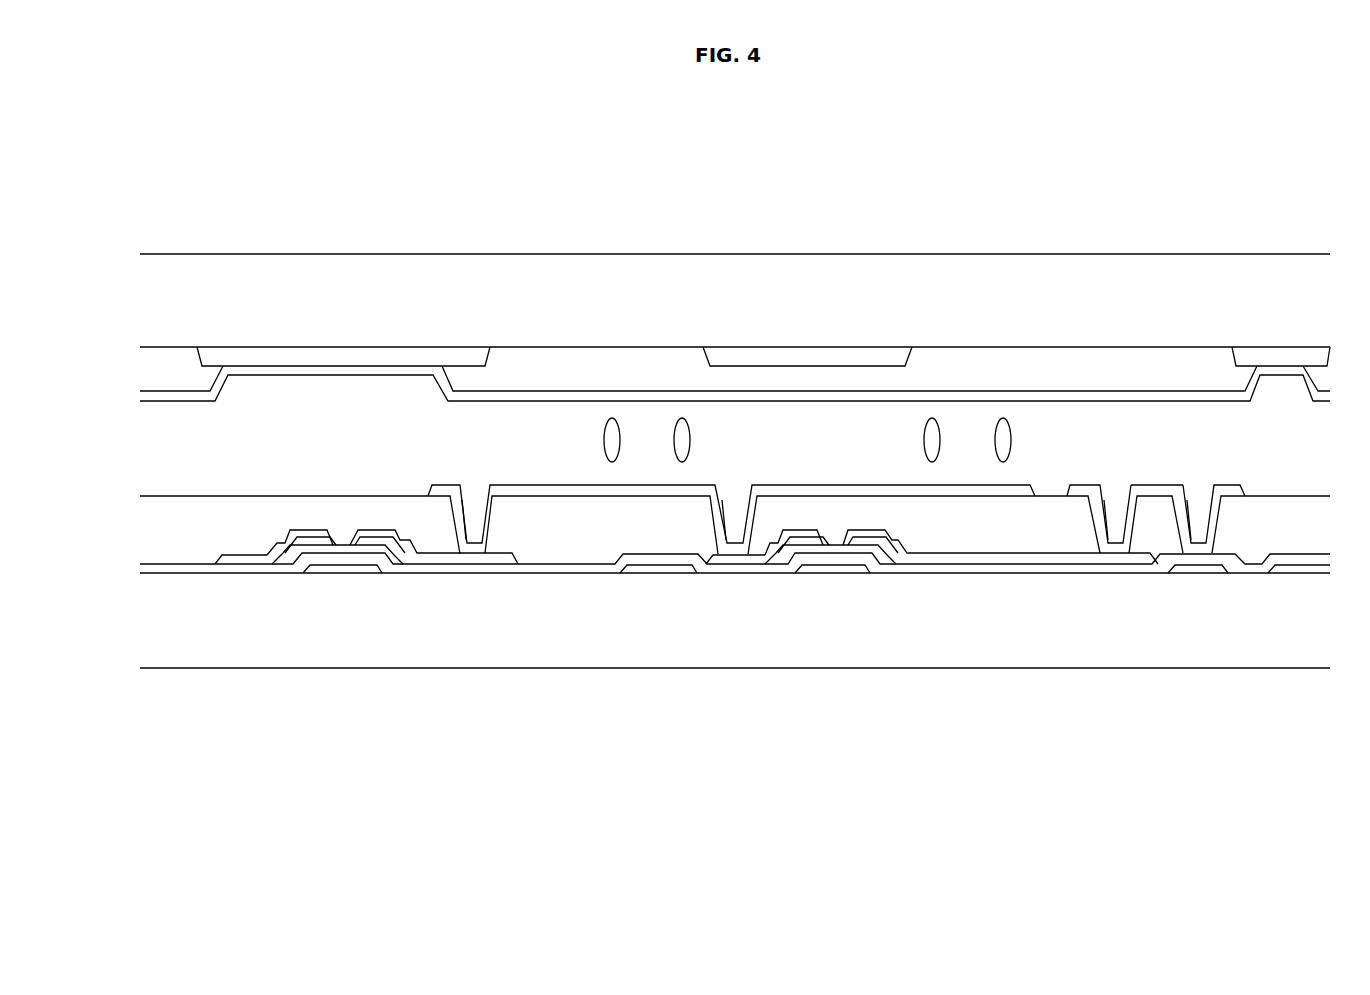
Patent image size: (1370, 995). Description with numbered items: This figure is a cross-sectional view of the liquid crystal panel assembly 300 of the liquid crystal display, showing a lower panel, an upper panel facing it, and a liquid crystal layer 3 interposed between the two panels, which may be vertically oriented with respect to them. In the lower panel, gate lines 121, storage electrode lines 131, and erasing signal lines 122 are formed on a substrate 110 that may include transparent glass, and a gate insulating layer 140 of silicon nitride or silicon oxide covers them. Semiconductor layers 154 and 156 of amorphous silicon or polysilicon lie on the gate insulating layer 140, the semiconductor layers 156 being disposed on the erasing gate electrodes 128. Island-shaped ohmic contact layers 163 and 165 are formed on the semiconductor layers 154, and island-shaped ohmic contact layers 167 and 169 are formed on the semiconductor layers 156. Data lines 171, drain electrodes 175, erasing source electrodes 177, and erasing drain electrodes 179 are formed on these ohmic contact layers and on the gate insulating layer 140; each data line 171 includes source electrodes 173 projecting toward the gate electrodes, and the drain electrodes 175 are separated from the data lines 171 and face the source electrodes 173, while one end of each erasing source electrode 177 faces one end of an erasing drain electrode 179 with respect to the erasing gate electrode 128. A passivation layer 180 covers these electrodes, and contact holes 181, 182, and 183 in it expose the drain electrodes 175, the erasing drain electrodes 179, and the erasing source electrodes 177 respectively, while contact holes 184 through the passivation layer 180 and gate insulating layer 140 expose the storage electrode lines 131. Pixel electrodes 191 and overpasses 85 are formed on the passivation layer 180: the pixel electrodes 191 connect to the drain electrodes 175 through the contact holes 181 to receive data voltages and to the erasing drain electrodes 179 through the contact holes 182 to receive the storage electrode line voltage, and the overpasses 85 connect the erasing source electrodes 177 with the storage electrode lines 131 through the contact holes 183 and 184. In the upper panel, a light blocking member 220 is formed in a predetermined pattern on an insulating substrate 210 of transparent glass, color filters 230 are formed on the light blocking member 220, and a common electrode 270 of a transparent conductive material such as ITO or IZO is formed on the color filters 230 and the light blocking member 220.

The liquid crystal panel assembly 300 is at (284, 181).
The insulating substrate 210 is at (458, 262).
The light blocking member 220 is at (369, 357).
The color filters 230 is at (621, 357).
The common electrode 270 is at (1002, 396).
The liquid crystal layer 3 is at (138, 400).
The substrate 110 is at (556, 653).
The gate lines 121 is at (330, 571).
The erasing signal lines 122 is at (660, 571).
The erasing gate electrodes 128 is at (825, 571).
The storage electrode lines 131 is at (1195, 571).
The gate insulating layer 140 is at (1112, 564).
The semiconductor layers 154 is at (362, 548).
The semiconductor layers 156 is at (856, 548).
The ohmic contact layers 163 is at (289, 548).
The ohmic contact layers 165 is at (393, 540).
The ohmic contact layers 167 is at (888, 540).
The ohmic contact layers 169 is at (776, 558).
The data lines 171 is at (245, 563).
The source electrodes 173 is at (322, 533).
The drain electrodes 175 is at (378, 533).
The erasing source electrodes 177 is at (866, 533).
The erasing drain electrodes 179 is at (812, 533).
The passivation layer 180 is at (1024, 541).
The contact holes 181 is at (463, 494).
The contact holes 182 is at (725, 494).
The contact holes 183 is at (1112, 490).
The contact holes 184 is at (1205, 490).
The pixel electrodes 191 is at (555, 484).
The overpasses 85 is at (1158, 484).